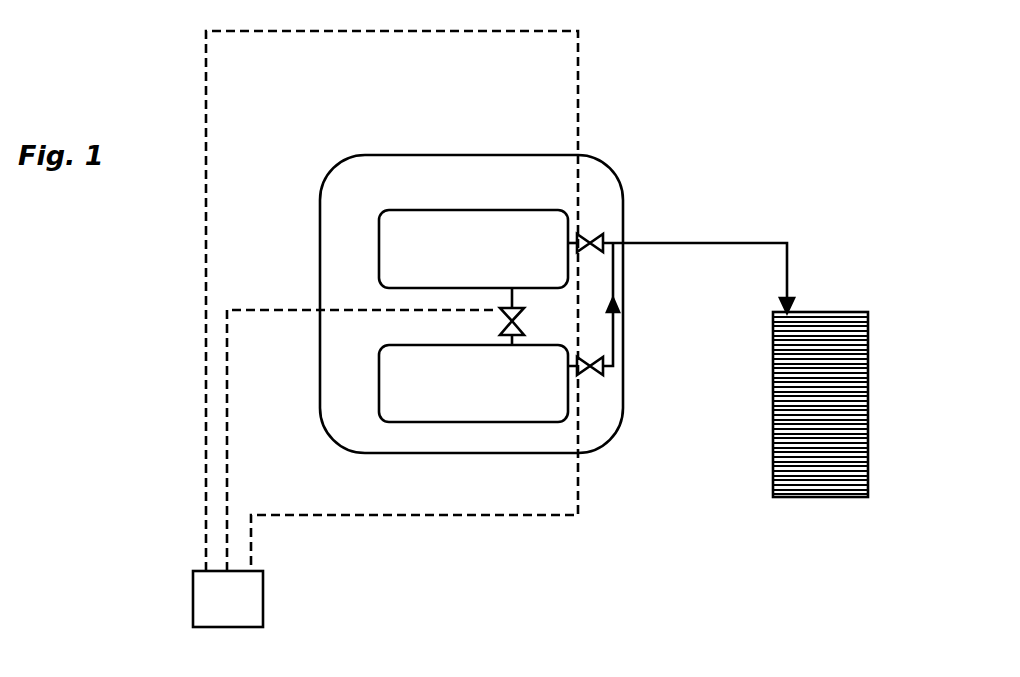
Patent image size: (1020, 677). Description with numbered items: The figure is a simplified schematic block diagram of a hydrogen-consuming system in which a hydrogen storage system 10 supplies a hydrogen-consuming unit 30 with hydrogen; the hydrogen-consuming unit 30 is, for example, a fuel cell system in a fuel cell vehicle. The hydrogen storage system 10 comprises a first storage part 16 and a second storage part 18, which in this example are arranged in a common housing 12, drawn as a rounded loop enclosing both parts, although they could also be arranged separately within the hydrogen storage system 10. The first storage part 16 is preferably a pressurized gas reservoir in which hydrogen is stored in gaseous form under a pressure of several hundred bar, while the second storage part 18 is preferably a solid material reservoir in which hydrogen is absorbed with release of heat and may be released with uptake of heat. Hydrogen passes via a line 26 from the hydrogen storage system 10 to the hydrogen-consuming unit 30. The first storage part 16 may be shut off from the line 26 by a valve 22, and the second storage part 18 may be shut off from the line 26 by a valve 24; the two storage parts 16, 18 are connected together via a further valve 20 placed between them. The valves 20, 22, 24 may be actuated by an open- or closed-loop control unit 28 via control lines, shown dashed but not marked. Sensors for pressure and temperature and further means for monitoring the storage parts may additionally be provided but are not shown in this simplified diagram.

The hydrogen storage system 10 is at (360, 138).
The common housing 12 is at (321, 295).
The first storage part 16 is at (480, 210).
The second storage part 18 is at (480, 422).
The valve 20 is at (505, 329).
The valve 22 is at (605, 236).
The valve 24 is at (598, 376).
The line 26 is at (718, 243).
The open- or closed-loop control unit 28 is at (263, 600).
The hydrogen-consuming unit 30 is at (868, 330).